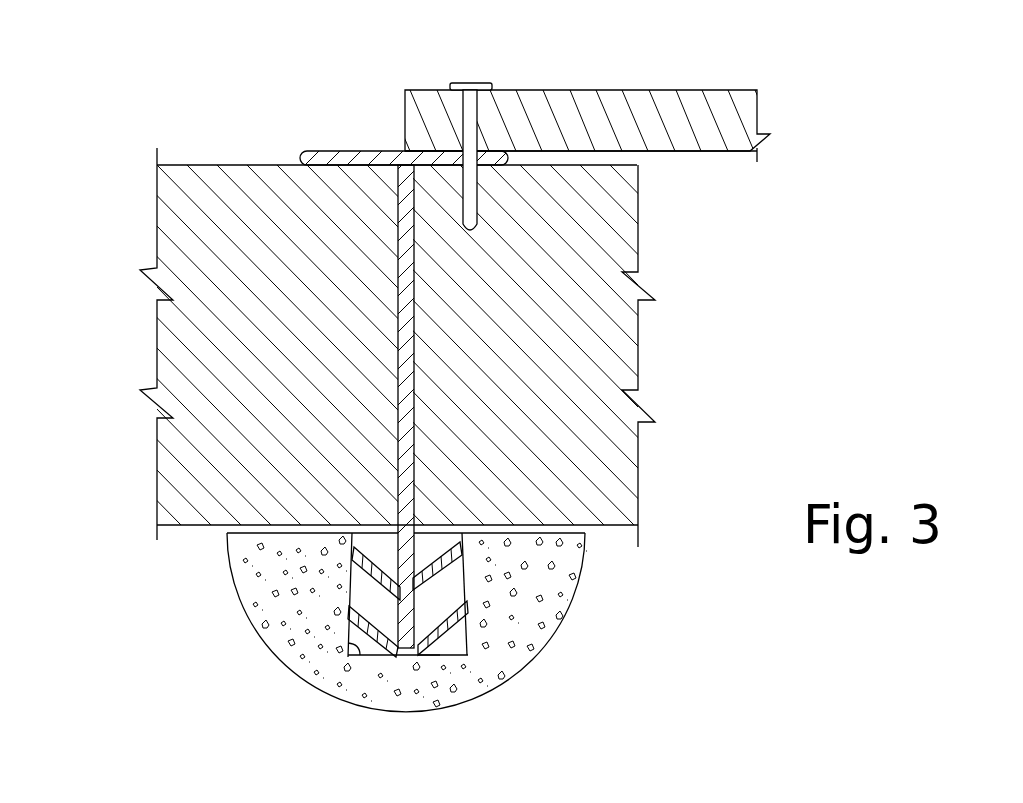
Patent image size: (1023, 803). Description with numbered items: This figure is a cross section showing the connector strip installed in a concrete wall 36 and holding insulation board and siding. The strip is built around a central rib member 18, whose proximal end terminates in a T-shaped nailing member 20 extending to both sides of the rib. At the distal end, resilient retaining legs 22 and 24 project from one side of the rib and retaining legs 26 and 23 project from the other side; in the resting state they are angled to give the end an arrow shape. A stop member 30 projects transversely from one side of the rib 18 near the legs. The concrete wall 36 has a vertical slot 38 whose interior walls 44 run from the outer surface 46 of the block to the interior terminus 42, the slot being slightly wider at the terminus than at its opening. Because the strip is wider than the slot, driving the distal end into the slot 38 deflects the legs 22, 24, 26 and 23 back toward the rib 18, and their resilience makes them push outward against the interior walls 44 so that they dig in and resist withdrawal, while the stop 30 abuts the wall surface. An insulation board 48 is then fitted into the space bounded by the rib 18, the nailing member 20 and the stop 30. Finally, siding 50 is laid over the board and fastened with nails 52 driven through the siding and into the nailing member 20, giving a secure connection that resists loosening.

The central rib member 18 is at (404, 331).
The nailing member 20 is at (342, 152).
The retaining leg 22 is at (372, 549).
The second upper sealing lip 23 is at (437, 563).
The retaining leg 24 is at (373, 619).
The retaining leg 26 is at (467, 657).
The stop member 30 is at (472, 532).
The concrete wall 36 is at (272, 637).
The slot 38 is at (377, 653).
The interior terminus 42 is at (435, 650).
The interior walls 44 is at (310, 728).
The outer surface 46 is at (577, 532).
The insulation board 48 is at (627, 338).
The siding 50 is at (607, 92).
The nails 52 is at (471, 80).